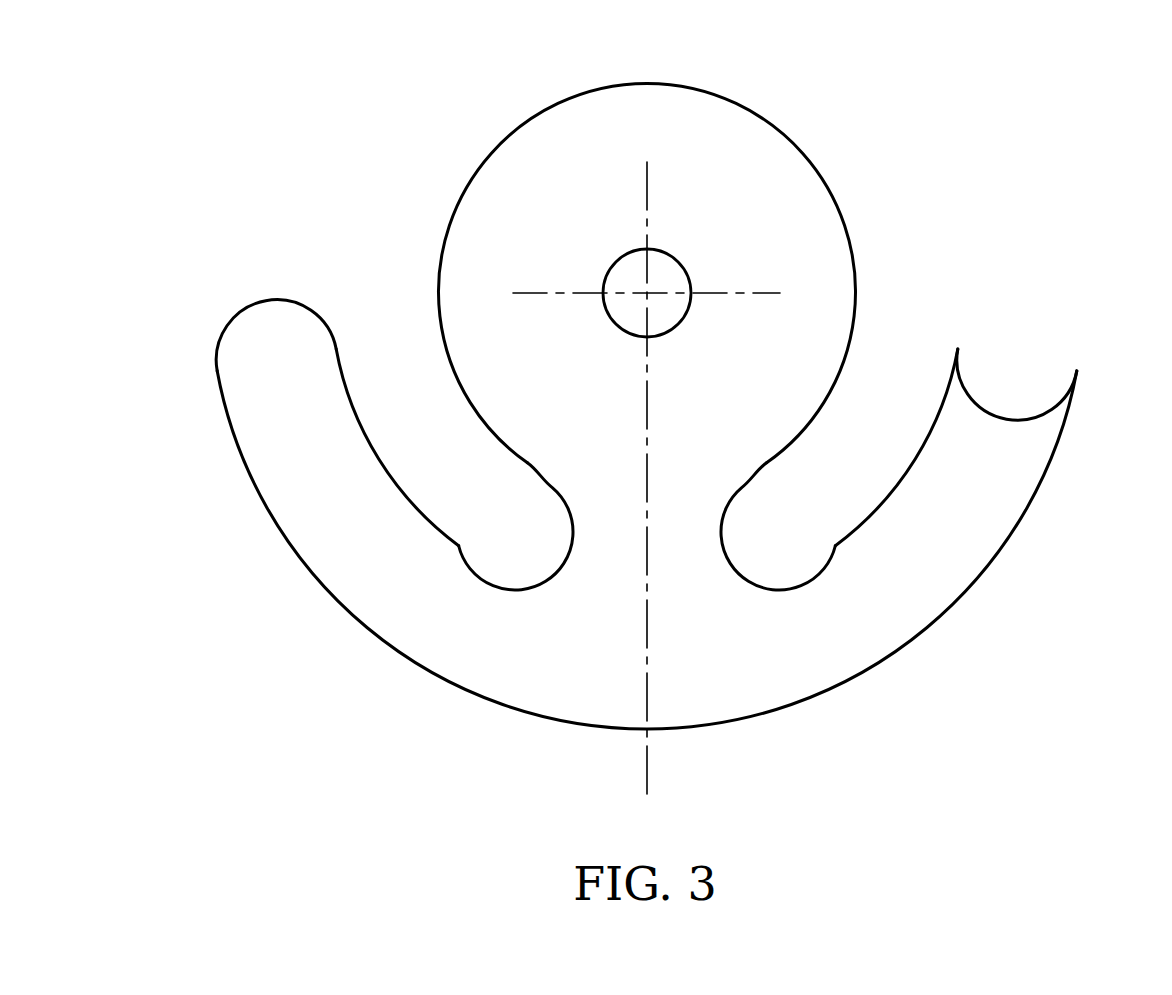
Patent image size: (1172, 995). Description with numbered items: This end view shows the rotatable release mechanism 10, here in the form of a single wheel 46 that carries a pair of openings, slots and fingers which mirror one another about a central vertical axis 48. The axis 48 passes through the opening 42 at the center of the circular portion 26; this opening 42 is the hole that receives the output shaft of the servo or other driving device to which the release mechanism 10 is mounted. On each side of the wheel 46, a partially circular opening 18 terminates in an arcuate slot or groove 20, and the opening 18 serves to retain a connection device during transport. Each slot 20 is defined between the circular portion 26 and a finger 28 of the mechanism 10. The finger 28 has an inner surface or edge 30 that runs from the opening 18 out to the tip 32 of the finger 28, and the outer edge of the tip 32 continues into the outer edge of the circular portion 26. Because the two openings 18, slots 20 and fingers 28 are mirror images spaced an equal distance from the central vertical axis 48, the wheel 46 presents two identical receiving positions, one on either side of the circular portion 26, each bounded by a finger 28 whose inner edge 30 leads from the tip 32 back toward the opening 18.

The rotatable release mechanism 10 is at (902, 97).
The partially circular opening 18 is at (517, 543).
The arcuate slot 20 is at (898, 363).
The circular portion 26 is at (630, 110).
The finger 28 is at (302, 463).
The inner surface of the finger 30 is at (350, 388).
The tip of the finger 32 is at (258, 298).
The opening of the circular portion 42 is at (673, 268).
The wheel 46 is at (555, 103).
The central vertical axis 48 is at (647, 773).